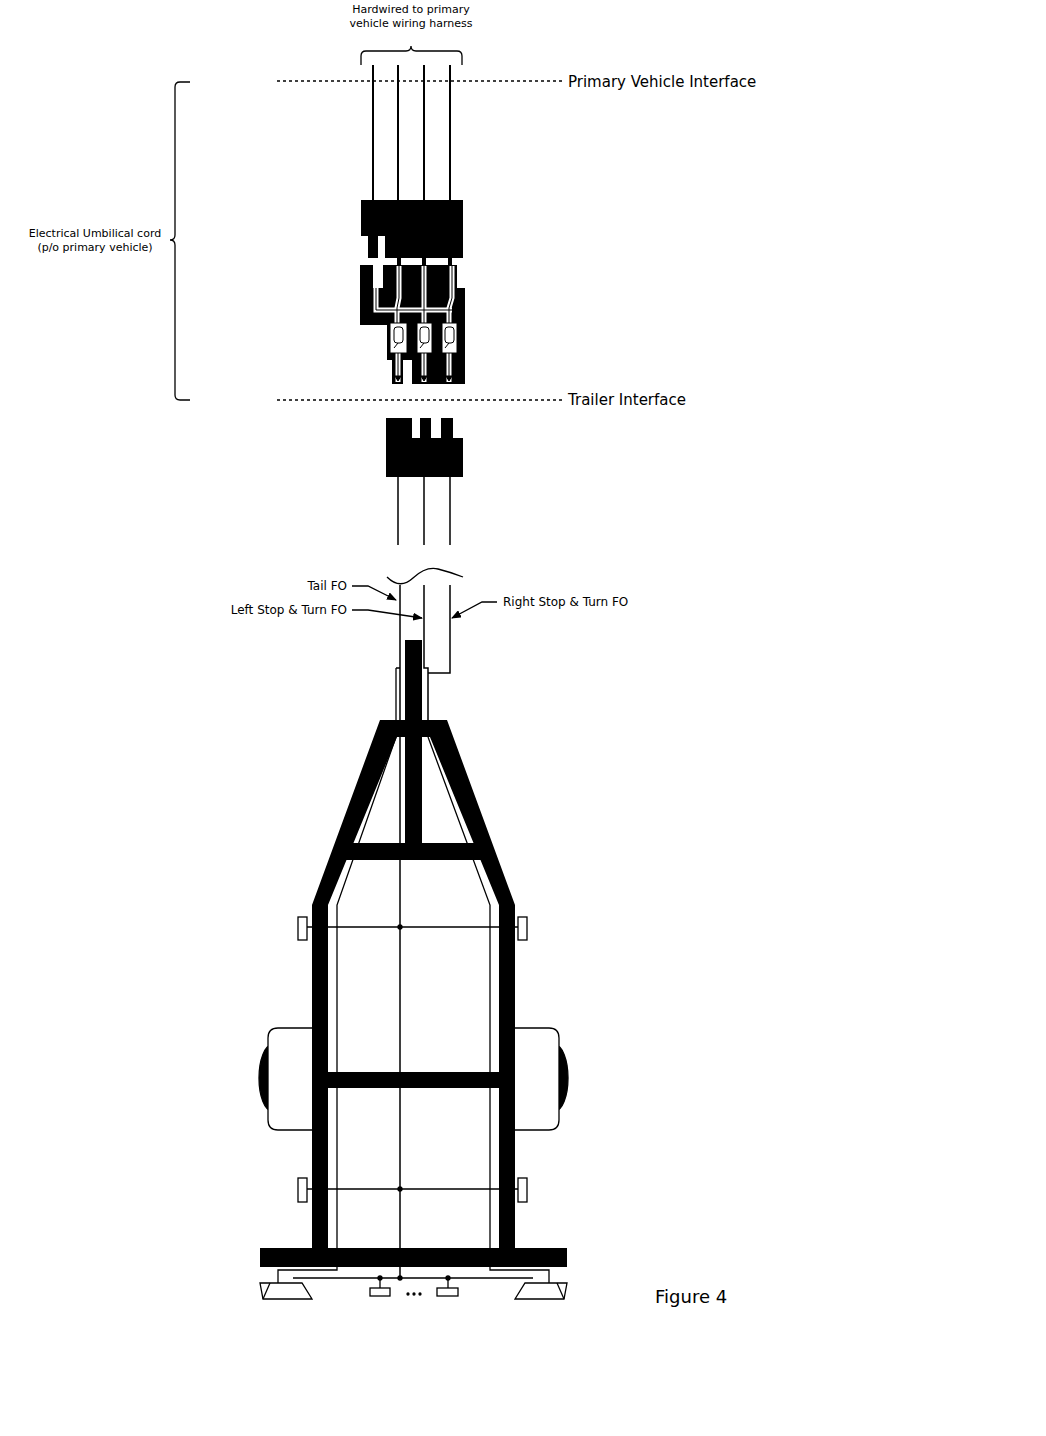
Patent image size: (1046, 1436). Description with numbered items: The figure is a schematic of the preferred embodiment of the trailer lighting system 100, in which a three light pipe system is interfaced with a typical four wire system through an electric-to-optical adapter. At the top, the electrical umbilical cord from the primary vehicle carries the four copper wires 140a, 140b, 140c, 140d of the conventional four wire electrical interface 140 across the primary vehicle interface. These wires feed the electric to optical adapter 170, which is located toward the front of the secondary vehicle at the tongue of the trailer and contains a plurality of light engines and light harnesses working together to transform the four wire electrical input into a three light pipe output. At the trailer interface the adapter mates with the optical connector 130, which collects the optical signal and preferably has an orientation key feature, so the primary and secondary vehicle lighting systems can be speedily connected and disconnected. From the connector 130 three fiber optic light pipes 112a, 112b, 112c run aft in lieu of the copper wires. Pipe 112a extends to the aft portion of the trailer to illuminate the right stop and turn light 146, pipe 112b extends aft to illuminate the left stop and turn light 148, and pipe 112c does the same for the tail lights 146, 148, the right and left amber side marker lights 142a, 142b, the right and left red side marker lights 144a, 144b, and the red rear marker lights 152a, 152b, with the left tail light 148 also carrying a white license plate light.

The lighting system 100 is at (630, 553).
The fiber optic light pipe 112a is at (452, 533).
The fiber optic light pipe 112b is at (426, 520).
The fiber optic light pipe 112c is at (396, 535).
The optical connector 130 is at (450, 447).
The four wire electrical interface 140 is at (437, 229).
The copper wire 140a is at (452, 175).
The copper wire 140b is at (426, 150).
The copper wire 140c is at (396, 150).
The copper wire 140d is at (371, 175).
The electric to optical adapter 170 is at (437, 321).
The amber side marker light 142a is at (545, 928).
The amber side marker light 142b is at (278, 928).
The red side marker light 144a is at (545, 1190).
The red side marker light 144b is at (278, 1190).
The red stop/directional and tail light 146 is at (541, 1301).
The red stop/directional and tail light 148 is at (286, 1304).
The red rear marker light 152a is at (403, 1301).
The red rear marker light 152b is at (447, 1286).